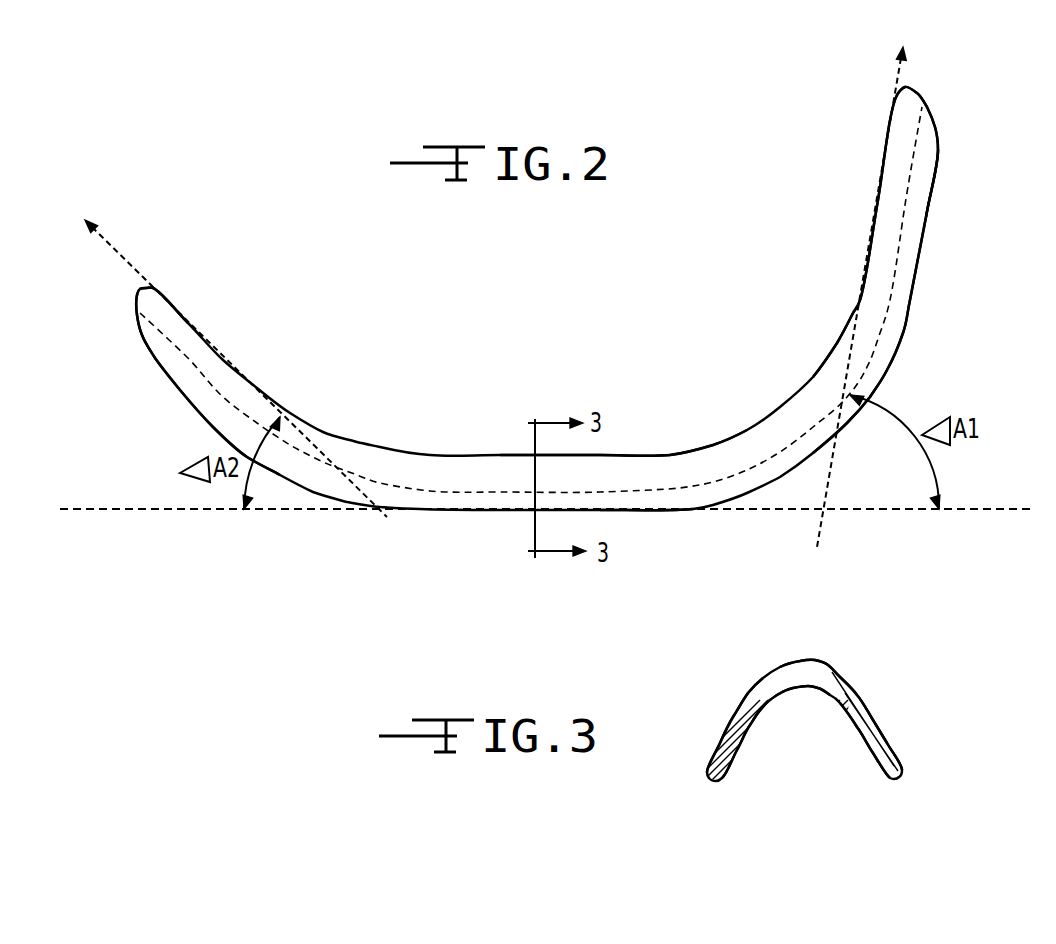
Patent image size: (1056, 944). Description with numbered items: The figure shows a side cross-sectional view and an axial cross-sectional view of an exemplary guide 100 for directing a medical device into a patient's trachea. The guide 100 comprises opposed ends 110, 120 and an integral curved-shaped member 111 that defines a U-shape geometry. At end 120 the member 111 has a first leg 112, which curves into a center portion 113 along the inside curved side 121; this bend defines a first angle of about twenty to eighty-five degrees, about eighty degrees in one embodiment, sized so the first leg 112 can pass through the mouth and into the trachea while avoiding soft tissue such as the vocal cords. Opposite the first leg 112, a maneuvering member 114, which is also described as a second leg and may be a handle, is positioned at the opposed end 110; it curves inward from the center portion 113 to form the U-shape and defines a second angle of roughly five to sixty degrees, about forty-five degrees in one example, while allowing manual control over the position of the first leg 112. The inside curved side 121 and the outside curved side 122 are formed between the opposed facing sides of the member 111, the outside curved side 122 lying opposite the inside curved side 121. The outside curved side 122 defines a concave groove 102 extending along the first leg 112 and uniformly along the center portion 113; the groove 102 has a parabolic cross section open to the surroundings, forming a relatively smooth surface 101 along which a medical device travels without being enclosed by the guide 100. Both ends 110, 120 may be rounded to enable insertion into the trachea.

In FIG. 2, the guide 100 is at (851, 156).
In FIG. 3, the smooth surface 101 is at (817, 692).
In FIG. 2, the concave groove 102 is at (926, 106).
In FIG. 3, the concave groove 102 is at (768, 716).
In FIG. 2, the opposed end 110 is at (138, 289).
In FIG. 2, the integral curved-shaped member 111 is at (692, 446).
In FIG. 2, the first leg 112 is at (929, 217).
In FIG. 2, the center portion 113 is at (640, 455).
In FIG. 2, the maneuvering member 114 is at (174, 389).
In FIG. 2, the end 120 is at (927, 156).
In FIG. 2, the inside curved side 121 is at (858, 287).
In FIG. 3, the inside curved side 121 is at (812, 660).
In FIG. 2, the outside curved side 122 is at (910, 368).
In FIG. 3, the outside curved side 122 is at (850, 753).